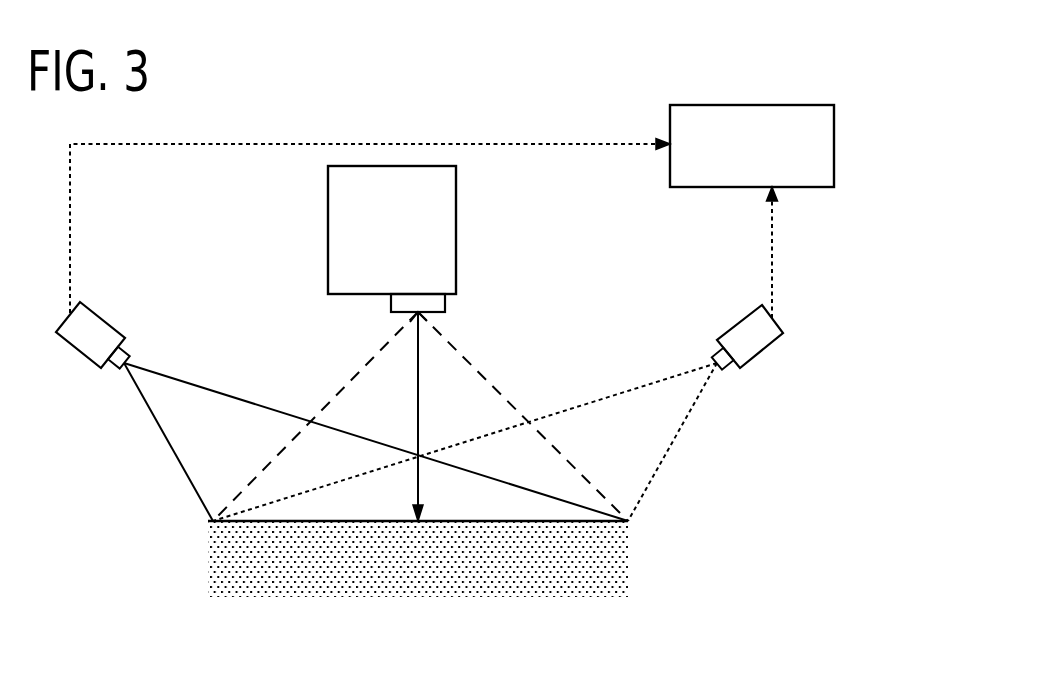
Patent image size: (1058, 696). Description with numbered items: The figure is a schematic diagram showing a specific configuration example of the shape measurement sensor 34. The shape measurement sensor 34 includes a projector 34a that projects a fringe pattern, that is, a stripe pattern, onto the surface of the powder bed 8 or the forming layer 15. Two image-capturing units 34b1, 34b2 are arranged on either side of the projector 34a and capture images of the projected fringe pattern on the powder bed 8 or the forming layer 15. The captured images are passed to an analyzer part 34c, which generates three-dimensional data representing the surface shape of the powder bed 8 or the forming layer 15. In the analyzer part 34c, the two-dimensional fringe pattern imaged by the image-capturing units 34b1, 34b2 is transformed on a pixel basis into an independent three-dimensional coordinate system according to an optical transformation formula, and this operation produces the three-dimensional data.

The shape measurement sensor 34 is at (812, 78).
The projector 34a is at (456, 228).
The image-capturing unit 34b1 is at (106, 315).
The image-capturing unit 34b2 is at (775, 340).
The analyzer part 34c is at (834, 143).
The powder bed 8 is at (463, 559).
The forming layer 15 is at (610, 552).